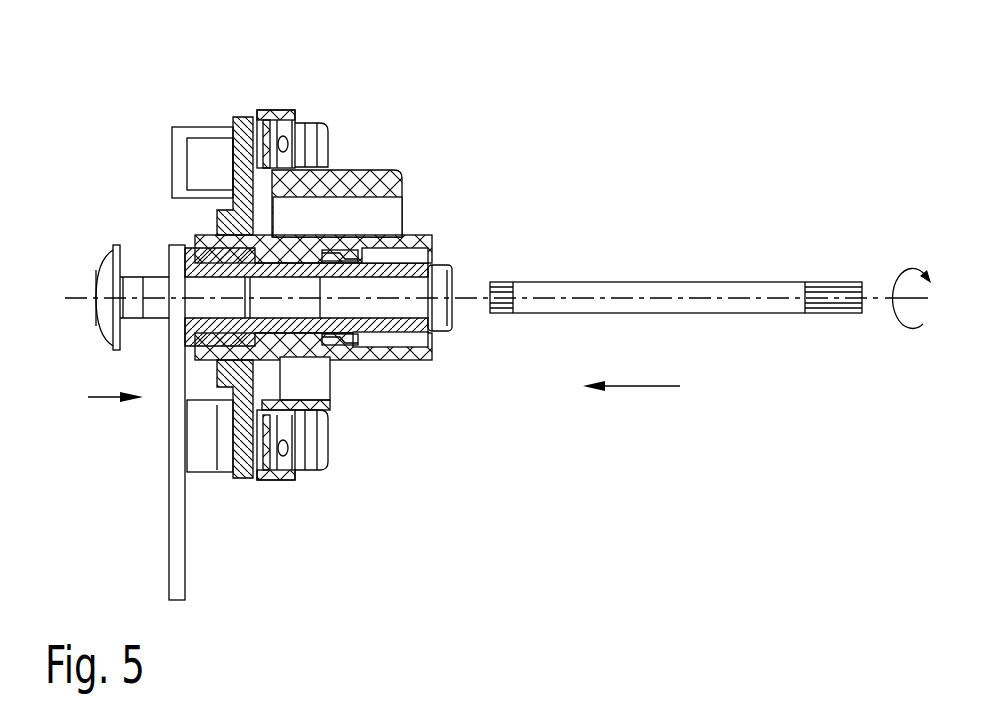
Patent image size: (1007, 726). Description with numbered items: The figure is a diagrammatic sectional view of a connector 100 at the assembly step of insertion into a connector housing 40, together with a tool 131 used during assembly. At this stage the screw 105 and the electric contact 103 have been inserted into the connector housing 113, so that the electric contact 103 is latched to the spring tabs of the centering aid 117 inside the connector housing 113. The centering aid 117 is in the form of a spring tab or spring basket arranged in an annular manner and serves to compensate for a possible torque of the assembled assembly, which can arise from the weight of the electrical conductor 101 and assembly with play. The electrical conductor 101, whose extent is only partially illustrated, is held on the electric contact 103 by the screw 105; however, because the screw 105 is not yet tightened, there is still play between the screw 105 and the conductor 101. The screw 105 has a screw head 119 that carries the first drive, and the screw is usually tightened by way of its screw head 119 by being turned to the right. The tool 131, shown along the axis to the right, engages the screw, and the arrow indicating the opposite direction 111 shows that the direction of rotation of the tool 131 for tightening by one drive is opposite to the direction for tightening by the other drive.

The insertion into a connector housing 40 is at (338, 508).
The connector 100 is at (404, 152).
The electrical conductor 101 is at (175, 528).
The electric contact 103 is at (403, 272).
The screw 105 is at (141, 254).
The opposite direction 111 is at (917, 263).
The connector housing 113 is at (301, 104).
The centering aid 117 is at (348, 350).
The screw head 119 is at (103, 321).
The tool 131 is at (678, 288).